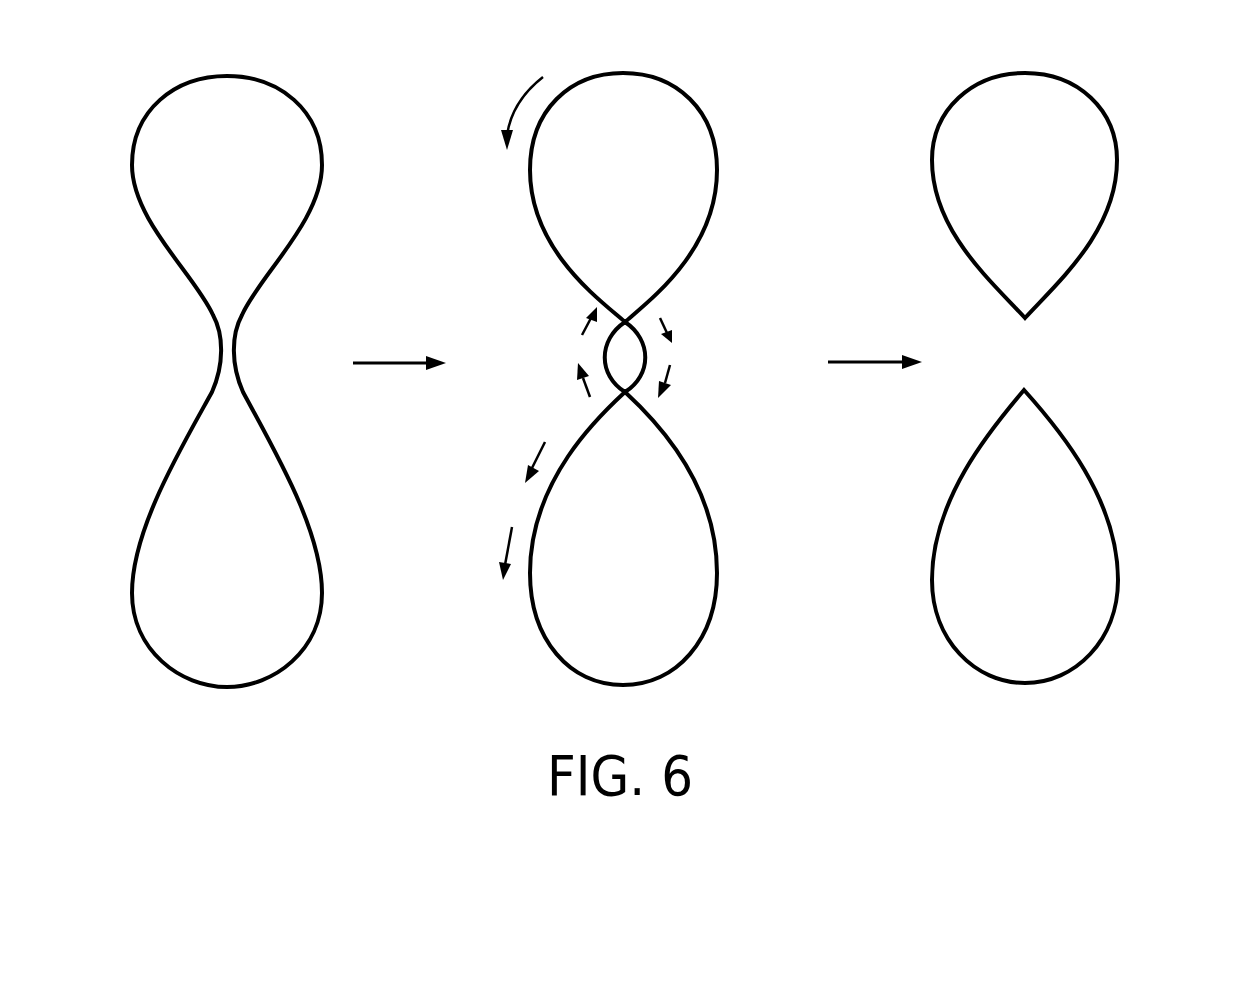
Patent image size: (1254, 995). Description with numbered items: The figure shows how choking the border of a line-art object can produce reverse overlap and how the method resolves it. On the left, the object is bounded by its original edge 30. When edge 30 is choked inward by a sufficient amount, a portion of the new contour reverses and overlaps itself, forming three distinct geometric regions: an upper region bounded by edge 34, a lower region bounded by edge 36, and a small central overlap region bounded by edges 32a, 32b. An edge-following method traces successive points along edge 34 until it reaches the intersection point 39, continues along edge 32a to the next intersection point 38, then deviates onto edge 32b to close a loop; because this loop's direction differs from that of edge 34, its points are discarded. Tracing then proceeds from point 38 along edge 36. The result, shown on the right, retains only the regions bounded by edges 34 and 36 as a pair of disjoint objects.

The edge 30 is at (298, 488).
The edge 34 is at (710, 130).
The edge 36 is at (717, 548).
The edge 32a is at (645, 359).
The edge 32b is at (605, 357).
The intersection point 38 is at (635, 398).
The intersection point 39 is at (628, 321).